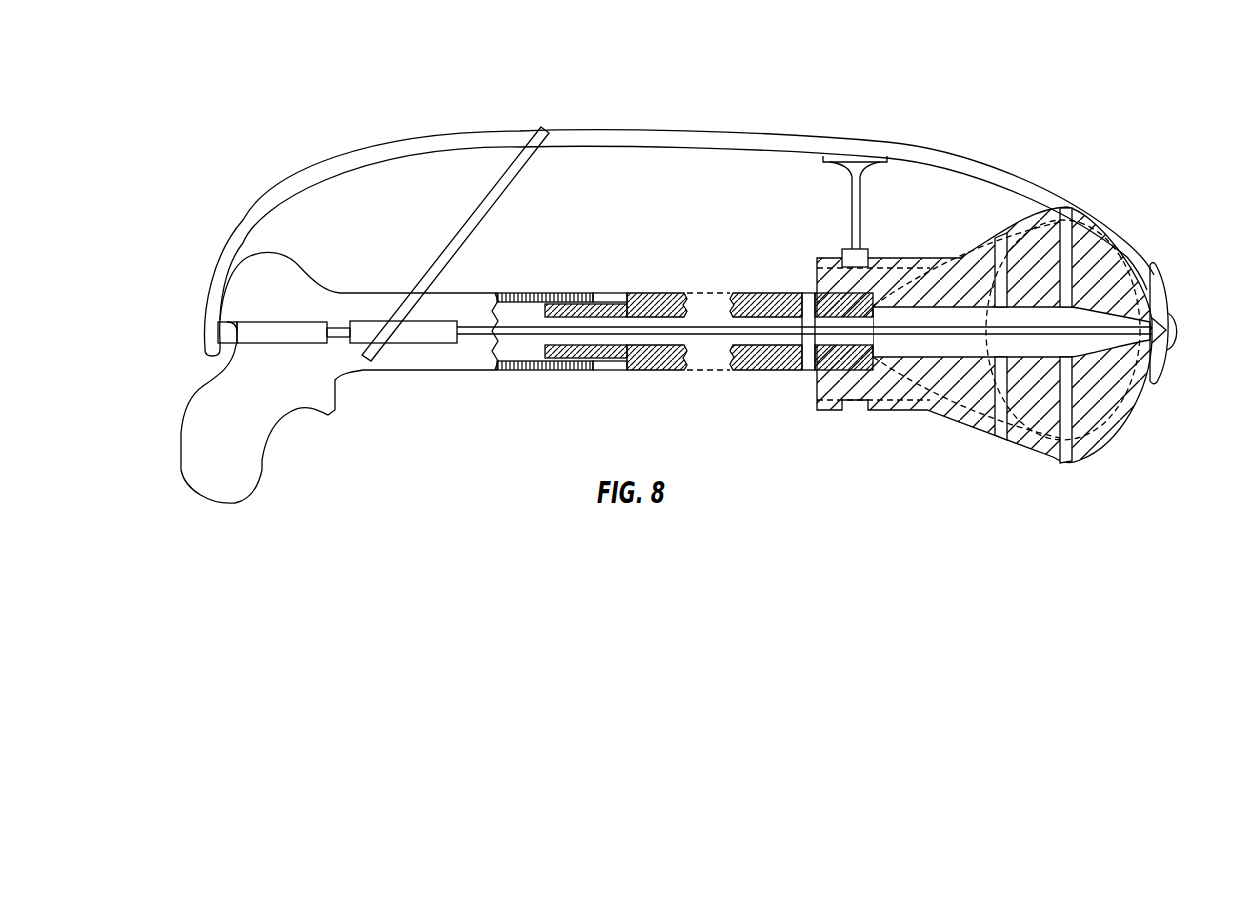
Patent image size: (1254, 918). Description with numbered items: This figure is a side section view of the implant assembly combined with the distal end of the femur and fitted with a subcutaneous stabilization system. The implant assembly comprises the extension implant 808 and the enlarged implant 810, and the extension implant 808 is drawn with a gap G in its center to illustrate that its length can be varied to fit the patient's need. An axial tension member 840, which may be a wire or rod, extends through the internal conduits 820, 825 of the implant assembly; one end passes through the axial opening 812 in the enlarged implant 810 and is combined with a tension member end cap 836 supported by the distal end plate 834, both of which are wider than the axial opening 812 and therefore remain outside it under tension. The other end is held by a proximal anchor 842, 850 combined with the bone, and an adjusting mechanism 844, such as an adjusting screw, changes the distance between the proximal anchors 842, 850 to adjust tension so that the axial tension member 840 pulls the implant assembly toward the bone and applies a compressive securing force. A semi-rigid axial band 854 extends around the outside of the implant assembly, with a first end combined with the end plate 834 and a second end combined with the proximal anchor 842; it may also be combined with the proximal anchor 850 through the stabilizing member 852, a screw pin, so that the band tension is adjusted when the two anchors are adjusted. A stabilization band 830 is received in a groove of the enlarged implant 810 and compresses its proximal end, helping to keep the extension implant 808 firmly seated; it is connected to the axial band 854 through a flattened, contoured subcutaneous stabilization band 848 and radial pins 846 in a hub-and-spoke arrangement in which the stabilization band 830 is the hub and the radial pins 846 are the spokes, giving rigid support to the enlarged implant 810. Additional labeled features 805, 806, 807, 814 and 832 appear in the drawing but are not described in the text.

The outer tube 805 is at (557, 295).
The outer tube 806 is at (538, 373).
The tube window 807 is at (607, 294).
The extension implant 808 is at (735, 375).
The enlarged implant 810 is at (955, 410).
The axial opening 812 is at (1151, 316).
The housing rings 814 is at (1063, 456).
The internal conduit 820 is at (1064, 311).
The internal conduit 825 is at (632, 318).
The stabilization band 830 is at (868, 252).
The plate 832 is at (806, 378).
The distal end plate 834 is at (1171, 367).
The tension member end cap 836 is at (1173, 334).
The axial tension member 840 is at (990, 325).
The proximal anchor 842 is at (229, 349).
The adjusting mechanism 844 is at (338, 320).
The radial pins 846 is at (862, 203).
The subcutaneous stabilization band 848 is at (829, 165).
The proximal anchor 850 is at (410, 347).
The stabilizing member 852 is at (474, 229).
The axial band 854 is at (712, 128).
The gap G is at (708, 331).